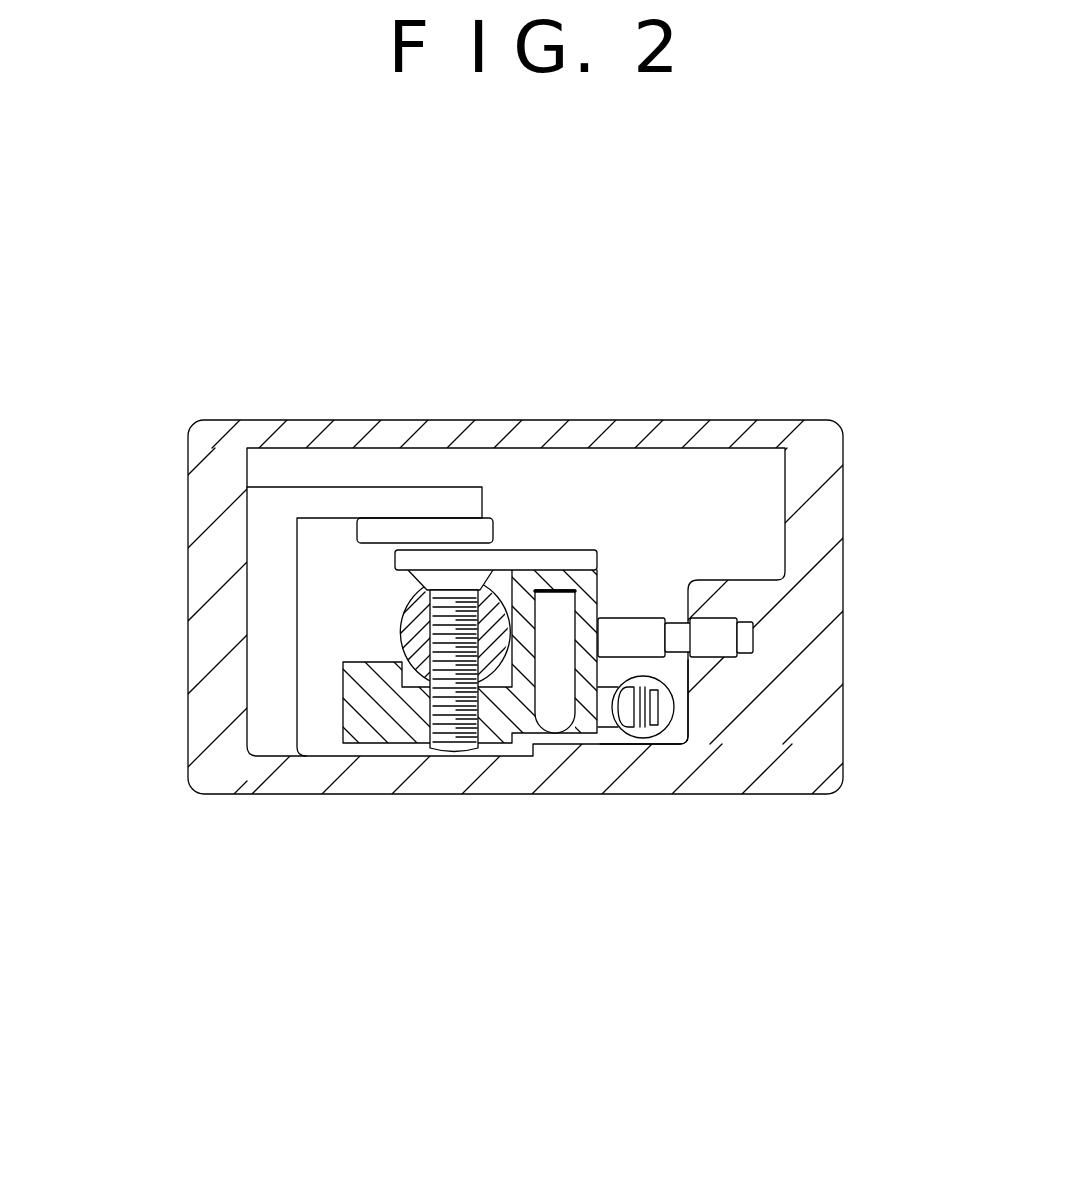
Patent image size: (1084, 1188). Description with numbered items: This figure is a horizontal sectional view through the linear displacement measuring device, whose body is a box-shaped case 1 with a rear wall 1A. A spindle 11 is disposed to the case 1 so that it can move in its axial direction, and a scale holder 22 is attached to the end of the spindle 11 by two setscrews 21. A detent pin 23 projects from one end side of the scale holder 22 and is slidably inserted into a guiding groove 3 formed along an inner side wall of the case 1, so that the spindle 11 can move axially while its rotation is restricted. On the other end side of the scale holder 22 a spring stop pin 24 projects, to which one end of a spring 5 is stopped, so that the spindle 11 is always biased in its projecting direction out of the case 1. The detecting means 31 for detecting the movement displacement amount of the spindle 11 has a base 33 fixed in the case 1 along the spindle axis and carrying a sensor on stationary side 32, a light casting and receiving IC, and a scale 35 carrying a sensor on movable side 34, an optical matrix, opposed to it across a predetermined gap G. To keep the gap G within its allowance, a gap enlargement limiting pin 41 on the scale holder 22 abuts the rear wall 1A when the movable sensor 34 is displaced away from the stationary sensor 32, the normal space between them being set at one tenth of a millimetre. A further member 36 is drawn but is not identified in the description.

The case 1 is at (843, 463).
The rear wall 1A is at (302, 783).
The guiding groove 3 is at (753, 637).
The spring 5 is at (683, 733).
The spindle 11 is at (405, 616).
The setscrews 21 is at (453, 713).
The scale holder 22 is at (520, 713).
The detent pin 23 is at (647, 618).
The spring stop pin 24 is at (610, 723).
The detecting means 31 is at (630, 272).
The sensor on stationary side 32 is at (422, 533).
The base 33 is at (458, 422).
The sensor on movable side 34 is at (575, 560).
The scale 35 is at (576, 436).
The bracket 36 is at (330, 497).
The gap enlargement limiting pin 41 is at (557, 718).
The gap G is at (516, 538).